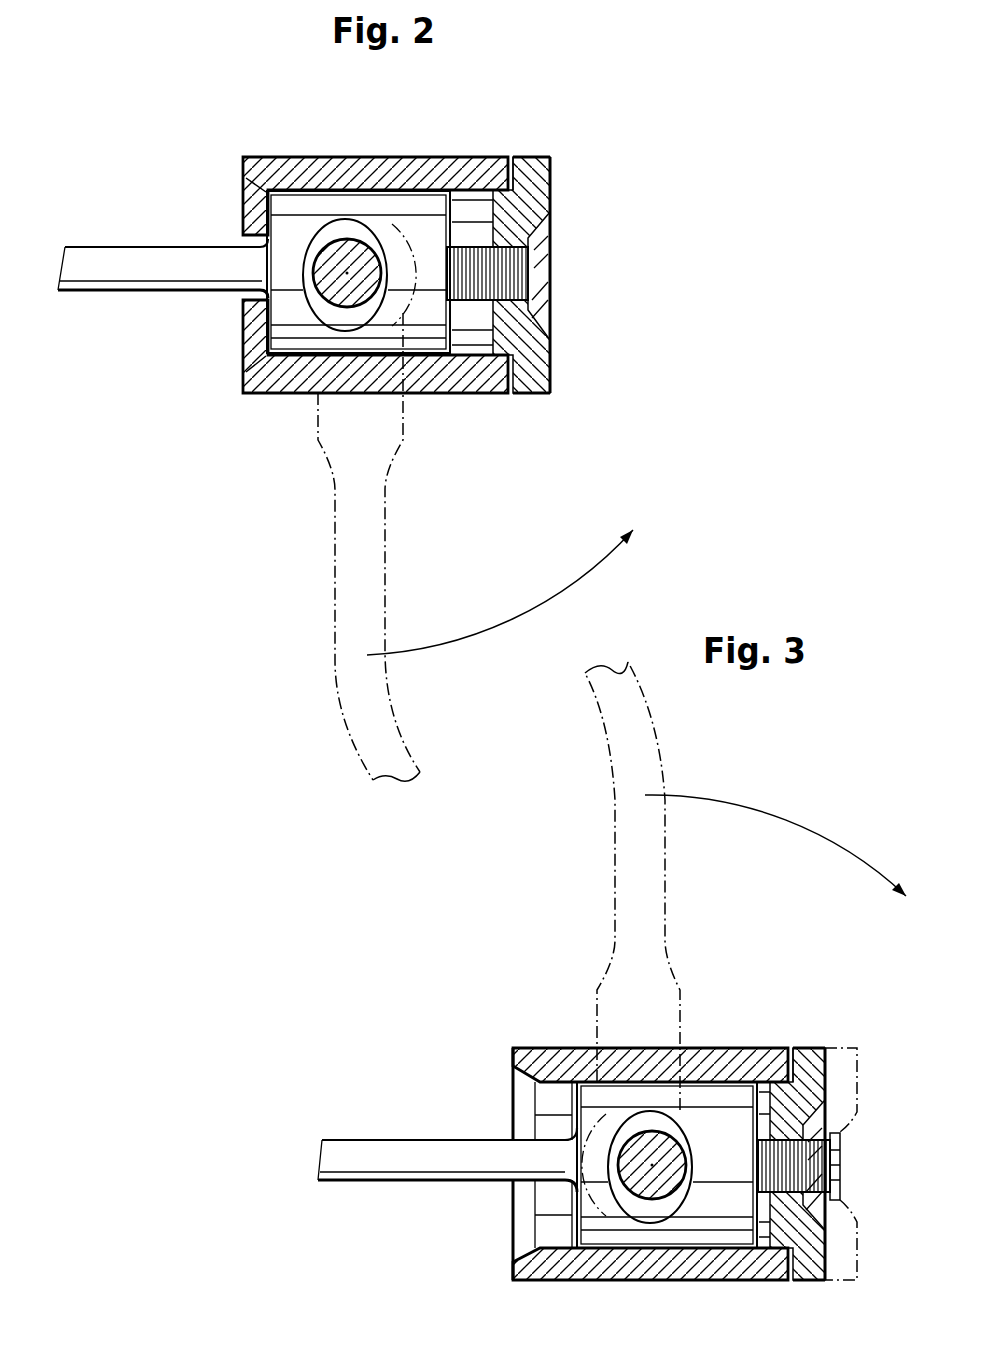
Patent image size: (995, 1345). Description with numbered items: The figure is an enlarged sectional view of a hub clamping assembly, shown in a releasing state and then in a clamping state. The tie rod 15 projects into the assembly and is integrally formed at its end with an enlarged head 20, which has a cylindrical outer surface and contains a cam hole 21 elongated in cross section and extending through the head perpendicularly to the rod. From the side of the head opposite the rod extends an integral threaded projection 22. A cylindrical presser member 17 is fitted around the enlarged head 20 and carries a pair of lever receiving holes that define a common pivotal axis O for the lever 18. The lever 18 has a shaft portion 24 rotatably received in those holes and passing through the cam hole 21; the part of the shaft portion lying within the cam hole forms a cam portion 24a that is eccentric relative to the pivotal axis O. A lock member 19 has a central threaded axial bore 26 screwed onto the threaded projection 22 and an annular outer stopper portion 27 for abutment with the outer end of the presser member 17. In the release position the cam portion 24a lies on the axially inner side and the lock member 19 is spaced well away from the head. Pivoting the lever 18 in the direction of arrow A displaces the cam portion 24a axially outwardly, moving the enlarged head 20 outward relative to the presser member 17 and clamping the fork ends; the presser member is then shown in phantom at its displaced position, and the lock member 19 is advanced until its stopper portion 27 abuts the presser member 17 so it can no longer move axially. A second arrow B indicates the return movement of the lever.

In FIG. 2, the tie rod 15 is at (120, 247).
In FIG. 3, the tie rod 15 is at (397, 1140).
In FIG. 2, the presser member 17 is at (397, 157).
In FIG. 3, the presser member 17 is at (737, 1048).
In FIG. 2, the lever 18 is at (388, 527).
In FIG. 3, the lever 18 is at (667, 875).
In FIG. 2, the lock member 19 is at (552, 157).
In FIG. 3, the lock member 19 is at (820, 1048).
In FIG. 2, the enlarged head 20 is at (420, 207).
In FIG. 3, the enlarged head 20 is at (697, 1240).
In FIG. 2, the cam hole 21 is at (323, 248).
In FIG. 3, the cam hole 21 is at (672, 1132).
In FIG. 2, the threaded projection 22 is at (550, 278).
In FIG. 3, the threaded projection 22 is at (840, 1150).
In FIG. 2, the shaft portion 24 is at (380, 223).
In FIG. 3, the shaft portion 24 is at (590, 1085).
In FIG. 2, the cam portion 24a is at (380, 243).
In FIG. 3, the cam portion 24a is at (638, 1218).
In FIG. 2, the threaded axial bore 26 is at (552, 298).
In FIG. 3, the threaded axial bore 26 is at (840, 1178).
In FIG. 2, the stopper portion 27 is at (505, 175).
In FIG. 3, the stopper portion 27 is at (782, 1062).
In FIG. 2, the pivotal axis O is at (345, 275).
In FIG. 3, the pivotal axis O is at (650, 1165).
In FIG. 2, the arrow A is at (512, 582).
In FIG. 3, the swing direction B is at (775, 863).